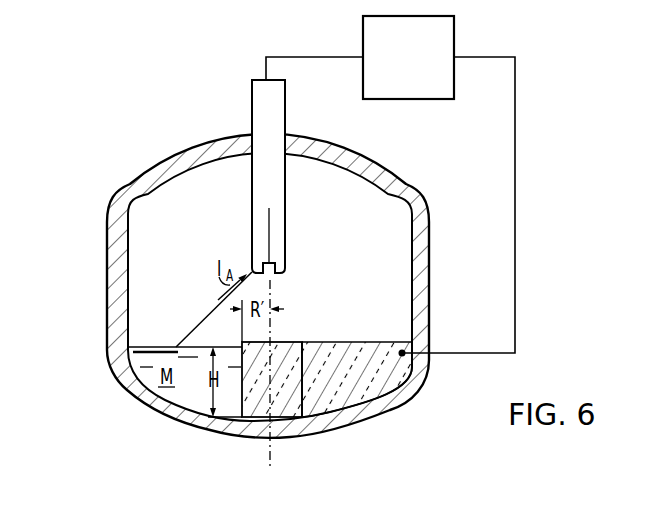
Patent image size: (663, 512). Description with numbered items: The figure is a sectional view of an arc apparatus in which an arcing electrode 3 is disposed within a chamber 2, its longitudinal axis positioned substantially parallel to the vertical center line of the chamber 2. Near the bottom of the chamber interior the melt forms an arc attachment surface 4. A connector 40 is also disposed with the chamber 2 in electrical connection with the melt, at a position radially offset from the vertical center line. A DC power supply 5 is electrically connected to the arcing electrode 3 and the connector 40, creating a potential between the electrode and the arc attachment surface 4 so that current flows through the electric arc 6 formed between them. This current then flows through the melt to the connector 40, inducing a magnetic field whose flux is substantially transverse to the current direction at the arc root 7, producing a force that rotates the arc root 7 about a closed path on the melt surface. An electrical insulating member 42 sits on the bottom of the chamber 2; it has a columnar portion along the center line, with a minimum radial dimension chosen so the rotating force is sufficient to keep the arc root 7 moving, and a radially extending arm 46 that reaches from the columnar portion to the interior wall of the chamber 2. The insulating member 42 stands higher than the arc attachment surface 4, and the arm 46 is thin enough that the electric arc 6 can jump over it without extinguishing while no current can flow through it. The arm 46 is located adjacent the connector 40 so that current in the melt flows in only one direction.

The chamber 2 is at (193, 223).
The arcing electrode 3 is at (285, 92).
The arc attachment surface 4 is at (152, 346).
The DC power supply 5 is at (452, 88).
The electric arc 6 is at (201, 320).
The arc root 7 is at (172, 346).
The connector 40 is at (402, 357).
The electrical insulating member 42 is at (285, 397).
The radially extending arm 46 is at (347, 342).